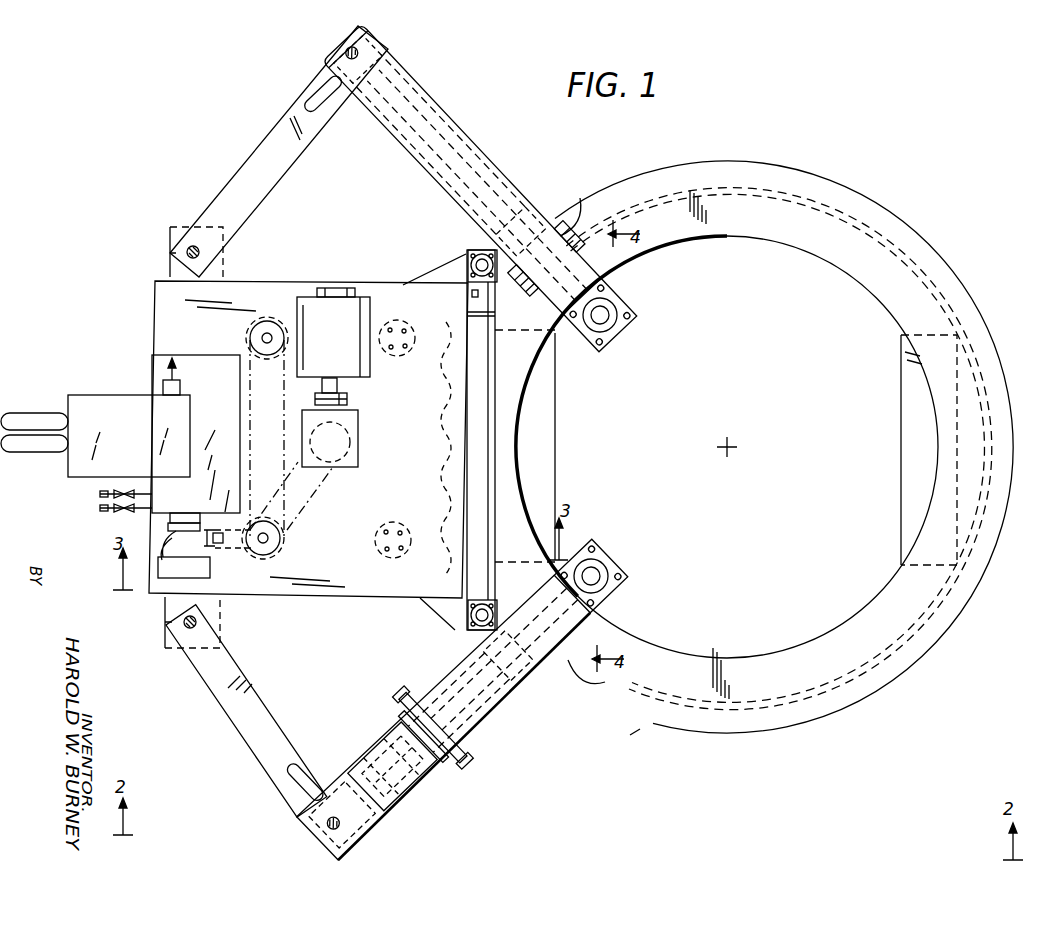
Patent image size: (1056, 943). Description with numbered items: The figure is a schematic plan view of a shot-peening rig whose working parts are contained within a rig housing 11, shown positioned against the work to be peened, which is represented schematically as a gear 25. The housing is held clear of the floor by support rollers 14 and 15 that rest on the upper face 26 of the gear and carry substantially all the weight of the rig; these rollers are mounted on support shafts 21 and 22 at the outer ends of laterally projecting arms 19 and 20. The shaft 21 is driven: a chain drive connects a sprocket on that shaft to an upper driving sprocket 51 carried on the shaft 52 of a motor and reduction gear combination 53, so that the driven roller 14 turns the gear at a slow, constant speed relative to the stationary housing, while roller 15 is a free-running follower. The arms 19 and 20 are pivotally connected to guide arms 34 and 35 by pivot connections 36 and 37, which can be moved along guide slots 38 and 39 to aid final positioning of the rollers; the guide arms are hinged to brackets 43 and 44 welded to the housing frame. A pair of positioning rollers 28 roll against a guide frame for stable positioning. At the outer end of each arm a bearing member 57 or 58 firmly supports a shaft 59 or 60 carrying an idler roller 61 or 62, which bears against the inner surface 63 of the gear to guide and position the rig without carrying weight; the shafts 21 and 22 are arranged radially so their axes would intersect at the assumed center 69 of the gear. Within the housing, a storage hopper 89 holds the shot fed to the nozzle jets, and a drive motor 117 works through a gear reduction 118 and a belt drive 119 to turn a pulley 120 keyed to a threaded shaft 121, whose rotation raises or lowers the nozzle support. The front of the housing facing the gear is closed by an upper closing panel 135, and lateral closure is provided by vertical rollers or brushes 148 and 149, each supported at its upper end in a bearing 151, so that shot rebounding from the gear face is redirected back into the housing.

The rig housing 11 is at (152, 357).
The support roller 14 is at (588, 670).
The support roller 15 is at (581, 208).
The laterally projecting arm 19 is at (478, 724).
The laterally projecting arm 20 is at (445, 116).
The support shaft 21 is at (512, 678).
The support shaft 22 is at (553, 215).
The gear 25 is at (707, 733).
The upper face of the gear 26 is at (645, 172).
The positioning rollers 28 is at (450, 348).
The guide arm 34 is at (232, 708).
The guide arm 35 is at (276, 166).
The pivot connection 36 is at (342, 823).
The pivot connection 37 is at (360, 56).
The guide slot 38 is at (295, 780).
The guide slot 39 is at (322, 102).
The bracket 43 is at (168, 648).
The bracket 44 is at (170, 252).
The upper driving sprocket 51 is at (462, 754).
The shaft 52 is at (406, 706).
The motor and reduction gear combination 53 is at (385, 748).
The bearing member 57 is at (630, 580).
The bearing member 58 is at (634, 308).
The shaft 59 is at (595, 572).
The shaft 60 is at (604, 324).
The idler roller 61 is at (618, 562).
The idler roller 62 is at (627, 325).
The inner surface of the gear 63 is at (675, 647).
The assumed center of the gear 69 is at (730, 445).
The storage hopper 89 is at (92, 395).
The drive motor 117 is at (366, 371).
The gear reduction 118 is at (358, 424).
The belt drive 119 is at (330, 491).
The pulley 120 is at (278, 552).
The threaded shaft 121 is at (286, 538).
The upper closing panel 135 is at (493, 518).
The vertical roller or brush 148 is at (480, 256).
The vertical roller or brush 149 is at (474, 630).
The bearing 151 is at (467, 263).